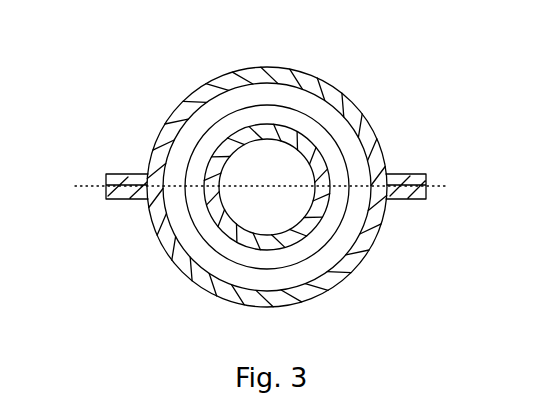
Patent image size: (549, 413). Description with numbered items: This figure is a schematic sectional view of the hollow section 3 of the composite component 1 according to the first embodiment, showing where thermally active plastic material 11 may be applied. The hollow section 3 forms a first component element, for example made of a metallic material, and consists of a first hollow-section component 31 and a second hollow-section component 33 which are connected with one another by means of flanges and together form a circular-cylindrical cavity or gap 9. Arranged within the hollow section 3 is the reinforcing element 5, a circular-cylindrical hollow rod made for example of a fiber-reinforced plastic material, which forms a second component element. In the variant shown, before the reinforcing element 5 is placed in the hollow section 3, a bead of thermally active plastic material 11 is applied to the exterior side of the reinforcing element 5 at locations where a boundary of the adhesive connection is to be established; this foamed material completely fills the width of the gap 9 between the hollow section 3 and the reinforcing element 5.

The composite component 1 is at (93, 78).
The hollow section 3 is at (141, 144).
The first hollow-section component 31 is at (200, 87).
The second hollow-section component 33 is at (178, 262).
The gap 9 is at (333, 122).
The thermally active plastic material 11 is at (338, 162).
The reinforcing element 5 is at (297, 230).